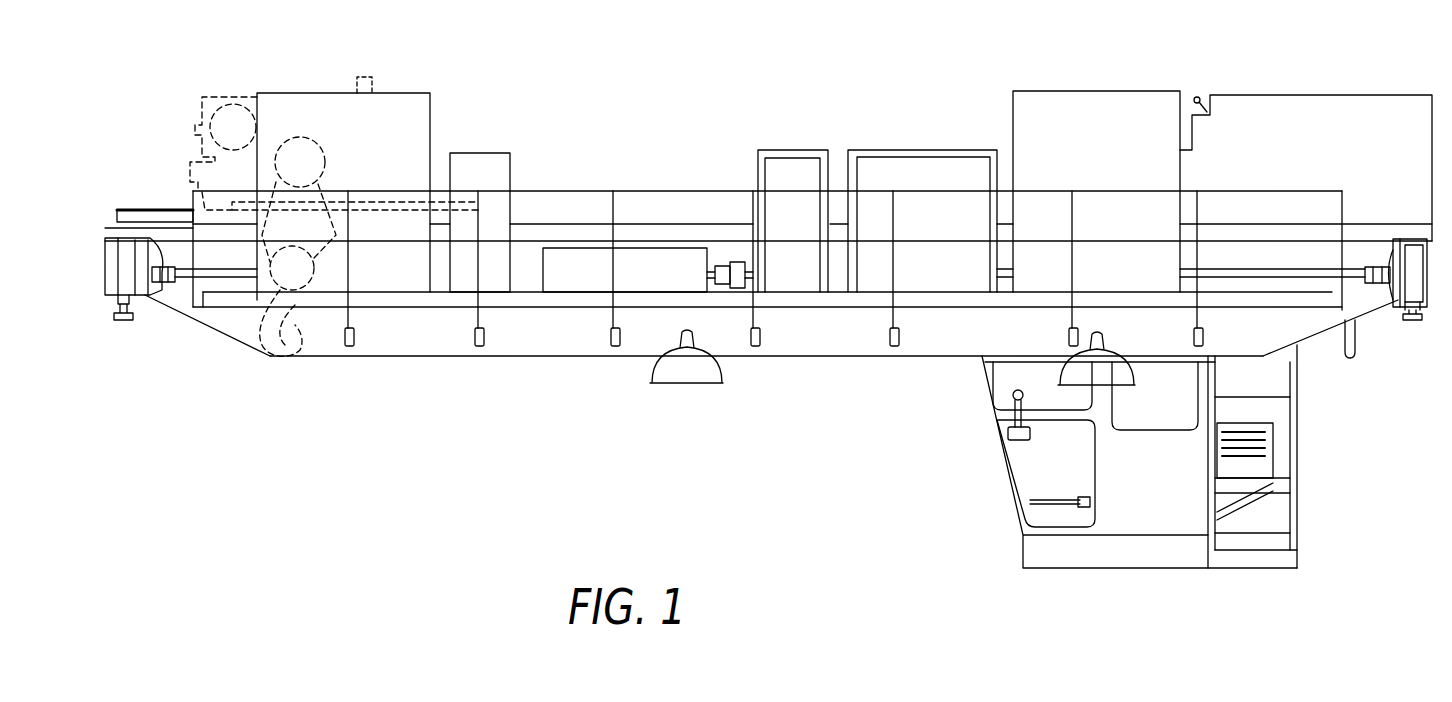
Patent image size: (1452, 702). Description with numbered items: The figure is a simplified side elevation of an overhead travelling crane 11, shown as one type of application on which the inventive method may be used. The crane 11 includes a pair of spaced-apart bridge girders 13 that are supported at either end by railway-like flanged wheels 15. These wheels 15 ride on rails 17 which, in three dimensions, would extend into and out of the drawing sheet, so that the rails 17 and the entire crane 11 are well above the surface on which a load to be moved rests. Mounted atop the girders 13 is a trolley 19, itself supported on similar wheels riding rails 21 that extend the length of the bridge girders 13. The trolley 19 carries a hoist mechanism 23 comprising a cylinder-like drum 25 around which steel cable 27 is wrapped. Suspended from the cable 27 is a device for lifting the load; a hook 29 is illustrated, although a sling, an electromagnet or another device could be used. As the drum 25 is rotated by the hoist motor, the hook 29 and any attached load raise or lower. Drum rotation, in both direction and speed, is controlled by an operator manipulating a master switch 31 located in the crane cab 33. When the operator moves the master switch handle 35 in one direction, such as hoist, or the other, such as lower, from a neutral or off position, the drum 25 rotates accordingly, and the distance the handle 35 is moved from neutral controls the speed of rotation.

The overhead travelling crane 11 is at (742, 122).
The bridge girders 13 is at (553, 340).
The flanged wheels 15 is at (127, 280).
The rails 17 is at (130, 323).
The trolley 19 is at (430, 93).
The rails 21 is at (167, 218).
The hoist mechanism 23 is at (299, 100).
The drum 25 is at (305, 163).
The steel cable 27 is at (318, 226).
The hook 29 is at (278, 352).
The master switch 31 is at (1007, 440).
The crane cab 33 is at (1028, 470).
The master switch handle 35 is at (1013, 397).